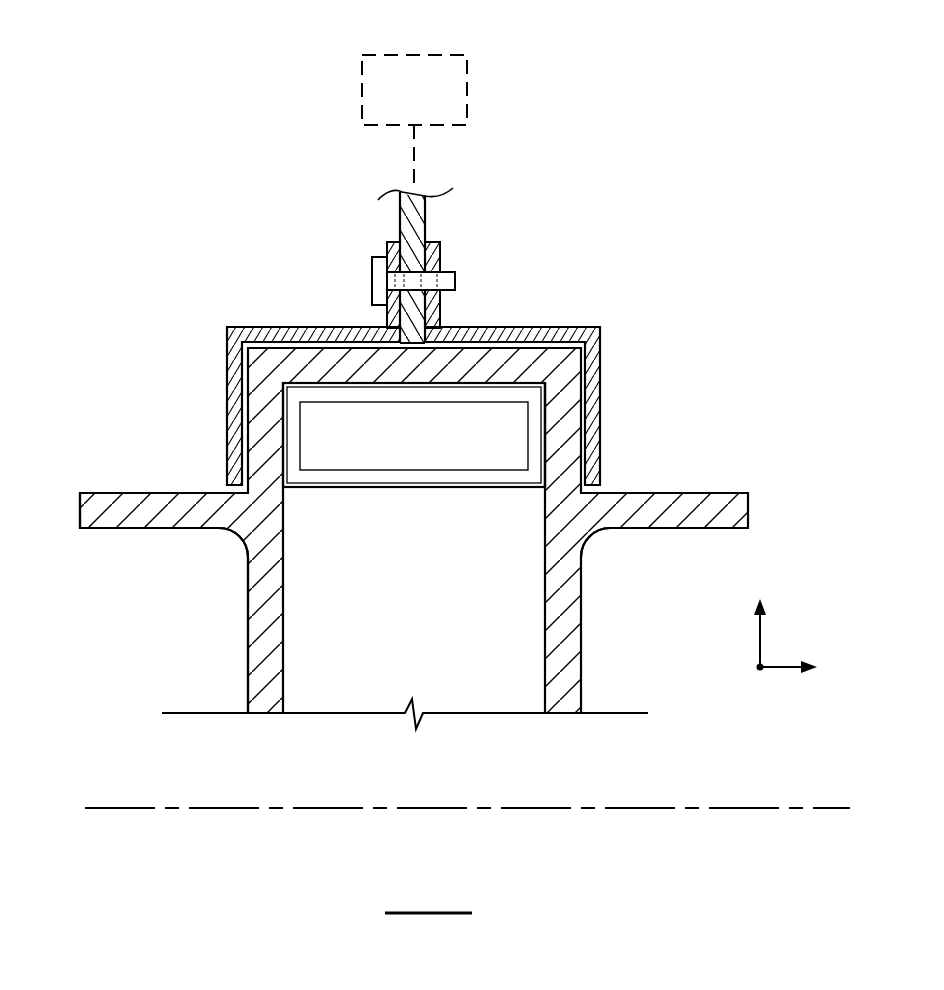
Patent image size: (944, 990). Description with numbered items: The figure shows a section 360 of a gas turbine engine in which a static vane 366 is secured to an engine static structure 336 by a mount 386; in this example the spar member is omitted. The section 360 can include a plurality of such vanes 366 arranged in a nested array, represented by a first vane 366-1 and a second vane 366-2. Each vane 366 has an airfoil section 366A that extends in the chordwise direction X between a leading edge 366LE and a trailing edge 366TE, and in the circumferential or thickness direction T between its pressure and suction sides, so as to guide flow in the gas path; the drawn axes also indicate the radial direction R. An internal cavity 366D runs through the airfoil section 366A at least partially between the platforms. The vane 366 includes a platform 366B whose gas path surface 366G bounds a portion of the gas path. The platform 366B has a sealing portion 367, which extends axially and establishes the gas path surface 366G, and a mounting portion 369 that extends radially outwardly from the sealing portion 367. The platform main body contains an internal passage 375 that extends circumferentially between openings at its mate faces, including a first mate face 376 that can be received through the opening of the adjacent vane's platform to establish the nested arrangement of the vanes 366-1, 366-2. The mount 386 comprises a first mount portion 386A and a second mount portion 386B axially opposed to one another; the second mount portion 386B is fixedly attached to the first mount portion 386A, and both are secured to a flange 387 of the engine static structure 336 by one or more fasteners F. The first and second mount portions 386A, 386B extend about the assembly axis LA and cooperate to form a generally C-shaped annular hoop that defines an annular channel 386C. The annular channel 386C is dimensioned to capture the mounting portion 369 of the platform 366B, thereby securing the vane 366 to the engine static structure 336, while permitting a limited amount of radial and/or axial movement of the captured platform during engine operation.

The section 360 is at (118, 78).
The engine static structure 336 is at (438, 103).
The flange 387 is at (420, 227).
The fastener F is at (372, 272).
The mount 386 is at (236, 318).
The first mount portion 386A is at (323, 327).
The second mount portion 386B is at (477, 327).
The annular channel 386C is at (579, 462).
The first mate face 376 is at (522, 397).
The sealing portion 367 is at (256, 400).
The vane 366 is at (76, 484).
The first vane 366-1 is at (149, 510).
The second vane 366-2 is at (560, 400).
The internal passage 375 is at (541, 435).
The mounting portion 369 is at (715, 493).
The gas path surface 366G is at (172, 520).
The first platform 366B is at (90, 520).
The leading edge 366LE is at (248, 618).
The airfoil section 366A is at (258, 655).
The internal cavity 366D is at (284, 692).
The trailing edge 366TE is at (584, 628).
The radial direction R is at (760, 617).
The chordwise direction X is at (796, 668).
The circumferential or thickness direction T is at (758, 668).
The assembly axis LA is at (730, 808).